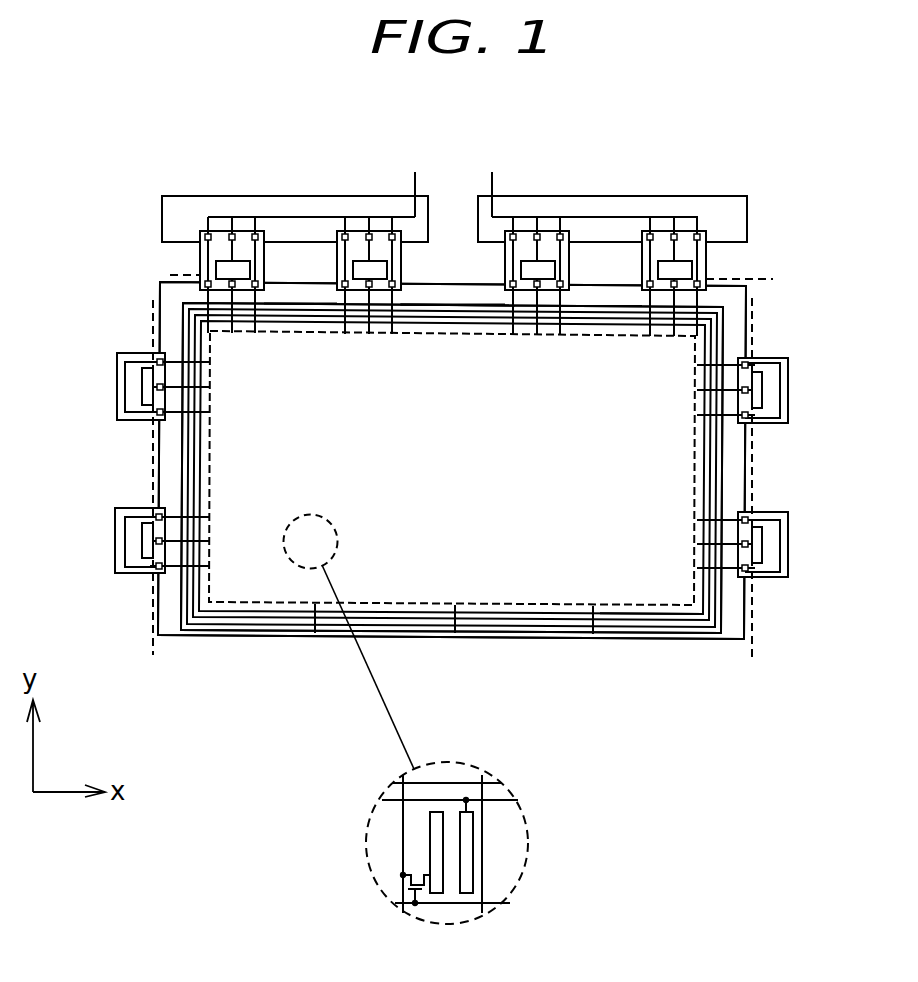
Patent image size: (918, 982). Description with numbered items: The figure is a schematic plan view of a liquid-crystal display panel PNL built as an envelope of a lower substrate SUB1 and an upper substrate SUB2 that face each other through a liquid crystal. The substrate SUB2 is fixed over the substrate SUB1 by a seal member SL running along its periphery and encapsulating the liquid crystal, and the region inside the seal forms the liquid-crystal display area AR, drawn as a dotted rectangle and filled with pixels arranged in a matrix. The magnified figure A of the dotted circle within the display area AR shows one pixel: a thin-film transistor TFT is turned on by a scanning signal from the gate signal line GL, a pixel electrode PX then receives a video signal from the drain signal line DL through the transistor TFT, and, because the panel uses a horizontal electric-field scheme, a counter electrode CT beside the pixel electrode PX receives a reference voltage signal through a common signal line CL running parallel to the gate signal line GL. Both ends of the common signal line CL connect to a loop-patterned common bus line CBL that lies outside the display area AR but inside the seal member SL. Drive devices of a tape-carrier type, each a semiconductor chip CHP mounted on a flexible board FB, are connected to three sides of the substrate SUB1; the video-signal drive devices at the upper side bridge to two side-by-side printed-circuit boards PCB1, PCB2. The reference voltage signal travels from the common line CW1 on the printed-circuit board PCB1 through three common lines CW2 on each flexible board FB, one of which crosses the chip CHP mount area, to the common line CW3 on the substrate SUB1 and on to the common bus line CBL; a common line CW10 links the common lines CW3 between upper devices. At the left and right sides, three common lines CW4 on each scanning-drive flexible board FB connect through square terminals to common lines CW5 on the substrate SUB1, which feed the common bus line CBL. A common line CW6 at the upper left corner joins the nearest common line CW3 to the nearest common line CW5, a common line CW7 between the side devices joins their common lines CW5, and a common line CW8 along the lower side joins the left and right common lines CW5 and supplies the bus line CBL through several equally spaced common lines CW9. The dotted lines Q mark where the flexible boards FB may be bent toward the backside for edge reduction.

The liquid-crystal display panel PNL is at (114, 273).
The substrate SUB1 is at (160, 440).
The substrate SUB2 is at (190, 493).
The seal member SL is at (183, 585).
The liquid-crystal display area AR is at (452, 468).
The printed-circuit board PCB1 is at (173, 213).
The printed-circuit board PCB2 is at (738, 220).
The semiconductor chip CHP is at (237, 262).
The flexible board FB is at (258, 246).
The common line CW1 is at (301, 219).
The common lines CW2 is at (203, 255).
The common line CW3 is at (512, 300).
The common lines CW4 is at (175, 414).
The common lines CW5 is at (177, 358).
The common line CW6 is at (182, 304).
The common line CW7 is at (195, 470).
The common line CW8 is at (208, 617).
The common lines CW9 is at (310, 632).
The common line CW10 is at (297, 308).
The common bus line CBL is at (642, 613).
The dotted lines Q is at (466, 480).
The magnified figure A is at (406, 720).
The gate signal line GL is at (457, 907).
The drain signal line DL is at (400, 858).
The common signal line CL is at (500, 796).
The pixel electrode PX is at (430, 838).
The counter electrode CT is at (473, 855).
The thin-film transistor TFT is at (393, 897).